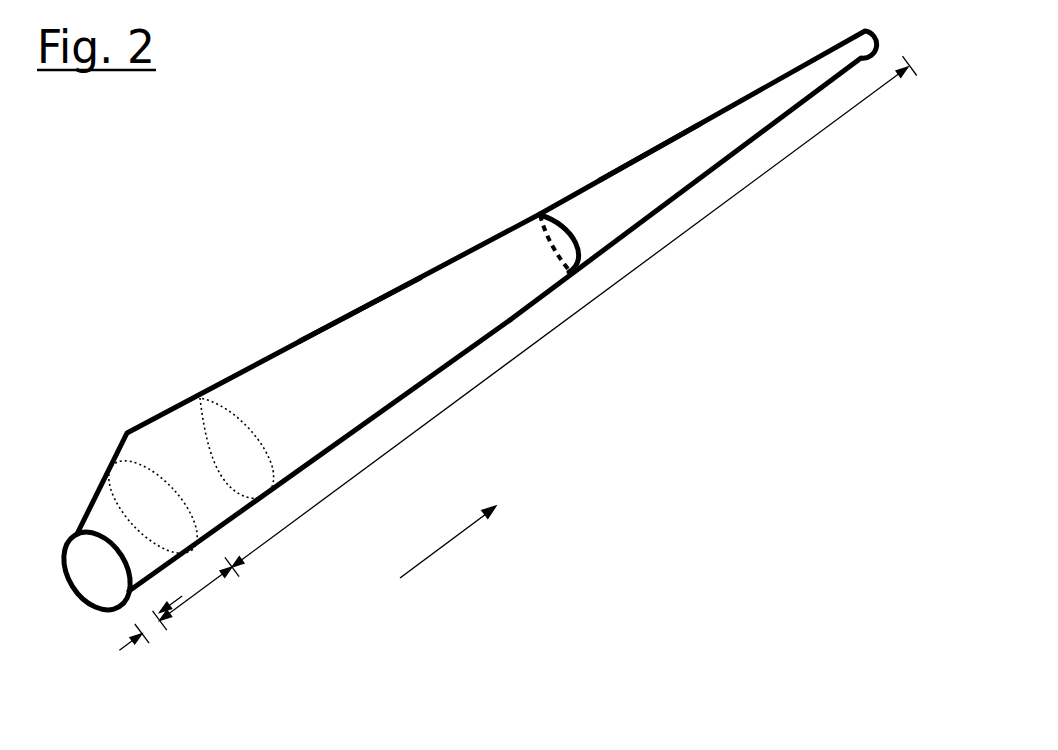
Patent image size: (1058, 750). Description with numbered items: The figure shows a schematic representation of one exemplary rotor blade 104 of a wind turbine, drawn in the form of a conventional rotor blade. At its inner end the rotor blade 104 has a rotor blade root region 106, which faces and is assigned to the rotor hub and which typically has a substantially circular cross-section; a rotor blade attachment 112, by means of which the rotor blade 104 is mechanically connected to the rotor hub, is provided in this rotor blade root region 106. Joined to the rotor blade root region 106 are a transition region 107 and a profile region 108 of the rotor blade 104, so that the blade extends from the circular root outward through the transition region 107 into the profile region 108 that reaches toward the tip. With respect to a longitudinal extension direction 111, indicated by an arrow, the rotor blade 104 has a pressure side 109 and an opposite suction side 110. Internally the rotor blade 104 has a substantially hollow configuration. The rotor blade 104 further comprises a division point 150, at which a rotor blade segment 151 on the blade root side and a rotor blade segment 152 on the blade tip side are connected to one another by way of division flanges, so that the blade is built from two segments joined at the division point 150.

The rotor blade 104 is at (477, 300).
The rotor blade root region 106 is at (147, 625).
The transition region 107 is at (210, 595).
The profile region 108 is at (553, 337).
The pressure side 109 is at (610, 212).
The suction side 110 is at (386, 271).
The longitudinal extension direction 111 is at (448, 544).
The rotor blade attachment 112 is at (63, 568).
The division point 150 is at (583, 247).
The rotor blade segment on the blade root side 151 is at (328, 365).
The rotor blade segment on the blade tip side 152 is at (707, 150).